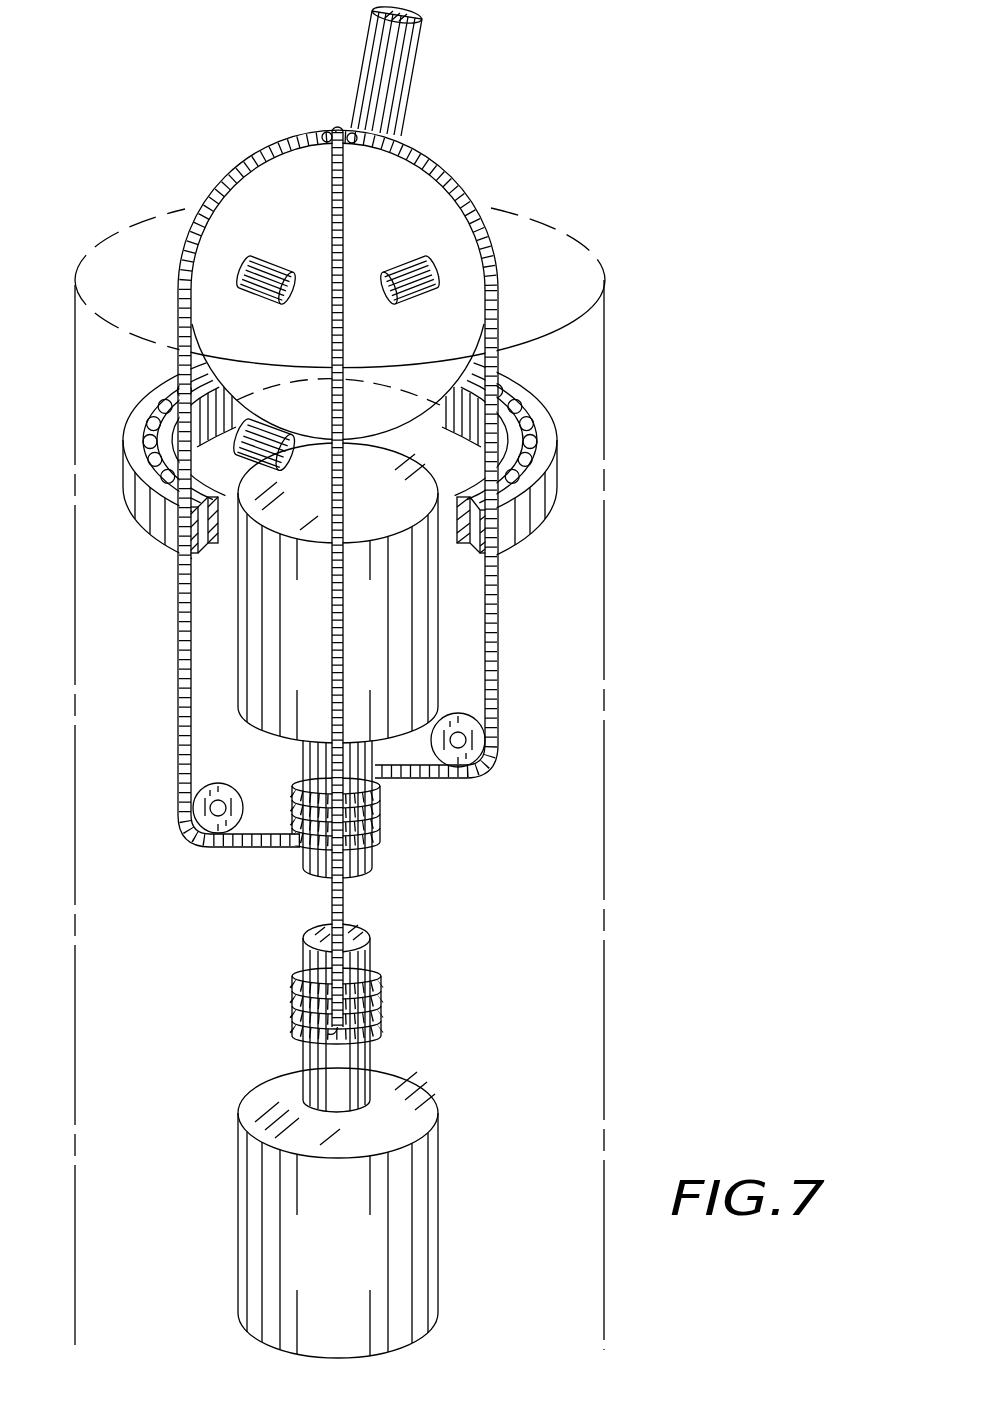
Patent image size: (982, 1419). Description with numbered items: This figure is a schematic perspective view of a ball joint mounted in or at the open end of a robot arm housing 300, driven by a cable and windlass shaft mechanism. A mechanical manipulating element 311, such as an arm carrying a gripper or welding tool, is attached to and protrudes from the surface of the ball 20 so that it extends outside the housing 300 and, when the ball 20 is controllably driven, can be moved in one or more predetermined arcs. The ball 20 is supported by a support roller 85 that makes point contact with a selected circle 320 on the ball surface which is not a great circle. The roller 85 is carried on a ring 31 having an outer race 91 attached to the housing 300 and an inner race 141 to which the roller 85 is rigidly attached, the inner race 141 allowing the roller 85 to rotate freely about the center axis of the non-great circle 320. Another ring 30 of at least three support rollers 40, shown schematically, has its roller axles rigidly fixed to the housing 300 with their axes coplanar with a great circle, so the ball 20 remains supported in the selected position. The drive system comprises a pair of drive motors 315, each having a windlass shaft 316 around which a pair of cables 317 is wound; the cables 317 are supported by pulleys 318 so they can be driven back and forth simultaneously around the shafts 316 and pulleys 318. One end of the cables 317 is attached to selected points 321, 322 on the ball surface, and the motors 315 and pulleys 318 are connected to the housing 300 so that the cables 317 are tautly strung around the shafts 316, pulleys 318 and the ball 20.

The ball 20 is at (304, 488).
The ring of support rollers 30 is at (334, 271).
The ring 31 is at (385, 465).
The support rollers 40 is at (268, 306).
The support roller 85 is at (292, 466).
The outer race 91 is at (526, 540).
The inner race 141 is at (517, 386).
The robot arm housing 300 is at (604, 525).
The mechanical manipulating element 311 is at (421, 60).
The drive motor 315 is at (407, 648).
The windlass shaft 316 is at (377, 853).
The cables 317 is at (178, 595).
The pulleys 318 is at (203, 777).
The selected circle 320 is at (356, 378).
The selected point 321 is at (337, 126).
The selected point 322 is at (324, 132).